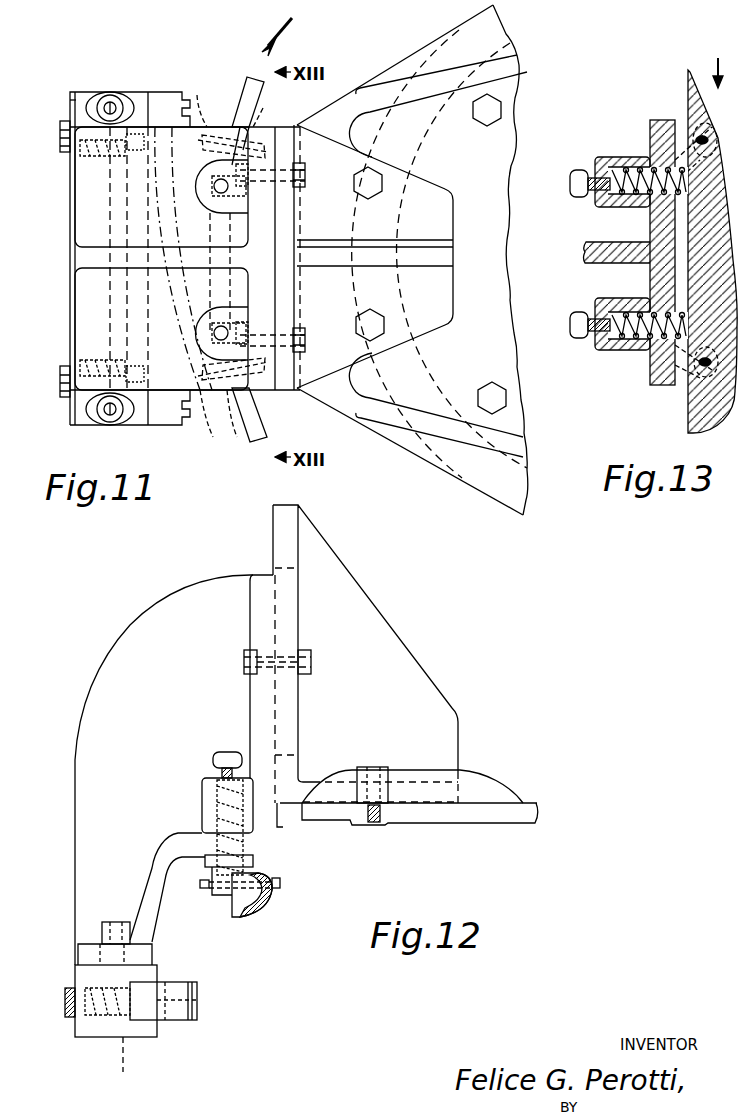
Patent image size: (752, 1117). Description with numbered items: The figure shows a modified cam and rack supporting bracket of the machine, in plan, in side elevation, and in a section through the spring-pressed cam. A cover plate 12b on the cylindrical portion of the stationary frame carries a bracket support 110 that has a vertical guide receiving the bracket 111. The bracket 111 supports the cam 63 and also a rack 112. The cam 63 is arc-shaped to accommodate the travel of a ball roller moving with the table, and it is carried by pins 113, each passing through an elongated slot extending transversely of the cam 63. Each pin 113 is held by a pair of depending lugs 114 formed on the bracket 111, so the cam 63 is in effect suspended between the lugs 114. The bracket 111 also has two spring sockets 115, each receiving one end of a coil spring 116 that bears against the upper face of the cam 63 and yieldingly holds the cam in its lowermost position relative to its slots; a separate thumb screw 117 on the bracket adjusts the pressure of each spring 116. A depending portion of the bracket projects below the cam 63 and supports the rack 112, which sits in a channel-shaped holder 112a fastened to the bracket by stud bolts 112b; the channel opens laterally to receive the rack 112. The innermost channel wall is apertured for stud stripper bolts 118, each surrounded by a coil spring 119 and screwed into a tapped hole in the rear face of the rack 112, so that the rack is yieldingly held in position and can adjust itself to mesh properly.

In FIG. 11, the cover plate 12b is at (506, 505).
In FIG. 12, the cover plate 12b is at (523, 802).
In FIG. 11, the cam 63 is at (253, 78).
In FIG. 13, the cam 63 is at (693, 410).
In FIG. 12, the cam 63 is at (262, 903).
In FIG. 11, the bracket support 110 is at (424, 190).
In FIG. 12, the bracket support 110 is at (414, 672).
In FIG. 11, the bracket 111 is at (78, 296).
In FIG. 13, the bracket 111 is at (584, 255).
In FIG. 12, the bracket 111 is at (118, 650).
In FIG. 11, the rack 112 is at (160, 93).
In FIG. 12, the rack 112 is at (185, 1016).
In FIG. 11, the holder 112a is at (70, 99).
In FIG. 12, the holder 112a is at (148, 1030).
In FIG. 11, the stud bolts 112b is at (111, 101).
In FIG. 12, the stud bolts 112b is at (100, 936).
In FIG. 11, the pins 113 is at (205, 131).
In FIG. 13, the pins 113 is at (710, 135).
In FIG. 12, the pins 113 is at (281, 882).
In FIG. 11, the depending lugs 114 is at (263, 127).
In FIG. 13, the depending lugs 114 is at (683, 132).
In FIG. 12, the depending lugs 114 is at (262, 866).
In FIG. 11, the spring sockets 115 is at (213, 200).
In FIG. 13, the spring sockets 115 is at (601, 206).
In FIG. 12, the spring sockets 115 is at (202, 792).
In FIG. 11, the coil spring 116 is at (258, 258).
In FIG. 13, the coil spring 116 is at (637, 167).
In FIG. 12, the coil spring 116 is at (215, 814).
In FIG. 13, the thumb screw 117 is at (570, 183).
In FIG. 12, the thumb screw 117 is at (212, 760).
In FIG. 11, the stud stripper bolts 118 is at (62, 137).
In FIG. 12, the stud stripper bolts 118 is at (65, 1000).
In FIG. 11, the coil spring 119 is at (106, 158).
In FIG. 12, the coil spring 119 is at (108, 1041).